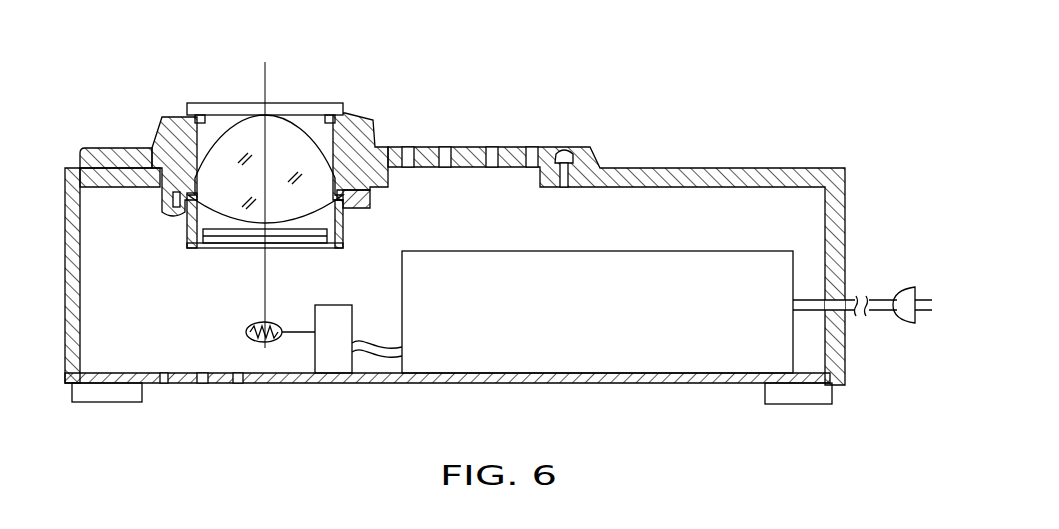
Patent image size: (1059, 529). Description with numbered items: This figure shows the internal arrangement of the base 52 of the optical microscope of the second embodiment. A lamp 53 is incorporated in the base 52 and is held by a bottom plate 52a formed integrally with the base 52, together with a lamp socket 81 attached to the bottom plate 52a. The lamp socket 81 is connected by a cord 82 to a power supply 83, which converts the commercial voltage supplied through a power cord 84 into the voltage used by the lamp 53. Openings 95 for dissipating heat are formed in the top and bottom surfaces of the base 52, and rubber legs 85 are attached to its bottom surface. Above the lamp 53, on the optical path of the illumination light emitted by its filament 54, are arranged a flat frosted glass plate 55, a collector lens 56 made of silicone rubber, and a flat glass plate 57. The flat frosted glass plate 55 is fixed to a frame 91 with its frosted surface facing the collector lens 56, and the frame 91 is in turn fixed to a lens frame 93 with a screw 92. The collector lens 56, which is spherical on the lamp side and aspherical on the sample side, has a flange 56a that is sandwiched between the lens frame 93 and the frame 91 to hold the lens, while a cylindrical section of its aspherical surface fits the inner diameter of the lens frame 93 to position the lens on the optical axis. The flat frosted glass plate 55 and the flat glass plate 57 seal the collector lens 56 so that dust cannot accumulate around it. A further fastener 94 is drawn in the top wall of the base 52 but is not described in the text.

The base 52 is at (760, 168).
The bottom plate 52a is at (557, 382).
The lamp 53 is at (246, 331).
The filament 54 is at (274, 323).
The flat frosted glass plate 55 is at (241, 236).
The collector lens 56 is at (248, 140).
The flange 56a is at (370, 205).
The flat glass plate 57 is at (300, 103).
The lamp socket 81 is at (335, 356).
The cord 82 is at (383, 360).
The power supply 83 is at (710, 350).
The power cord 84 is at (886, 316).
The rubber legs 85 is at (127, 396).
The frame 91 is at (195, 250).
The screw 92 is at (170, 215).
The lens frame 93 is at (172, 120).
The screw 94 is at (563, 150).
The openings 95 is at (532, 147).